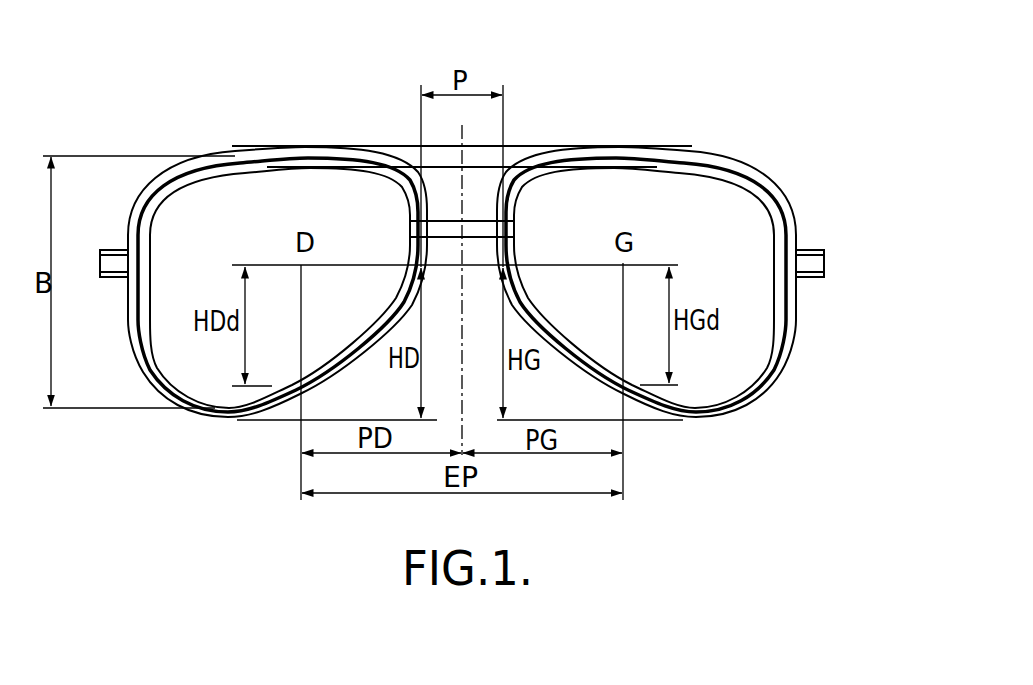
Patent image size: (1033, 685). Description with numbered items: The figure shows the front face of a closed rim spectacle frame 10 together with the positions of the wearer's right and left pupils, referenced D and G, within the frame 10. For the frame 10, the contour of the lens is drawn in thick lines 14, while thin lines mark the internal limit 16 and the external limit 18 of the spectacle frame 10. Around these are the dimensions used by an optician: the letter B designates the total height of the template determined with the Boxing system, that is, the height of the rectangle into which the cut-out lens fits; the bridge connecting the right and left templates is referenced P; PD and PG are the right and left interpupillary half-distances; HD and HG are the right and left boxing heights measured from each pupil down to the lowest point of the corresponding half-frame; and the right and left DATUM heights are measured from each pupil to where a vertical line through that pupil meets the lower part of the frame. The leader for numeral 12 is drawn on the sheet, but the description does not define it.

The spectacle frame 10 is at (590, 118).
The lens 12 is at (745, 333).
The contour of the lens 14 is at (743, 398).
The internal limit of the spectacle frame 16 is at (146, 319).
The external limit of the spectacle frame 18 is at (140, 366).